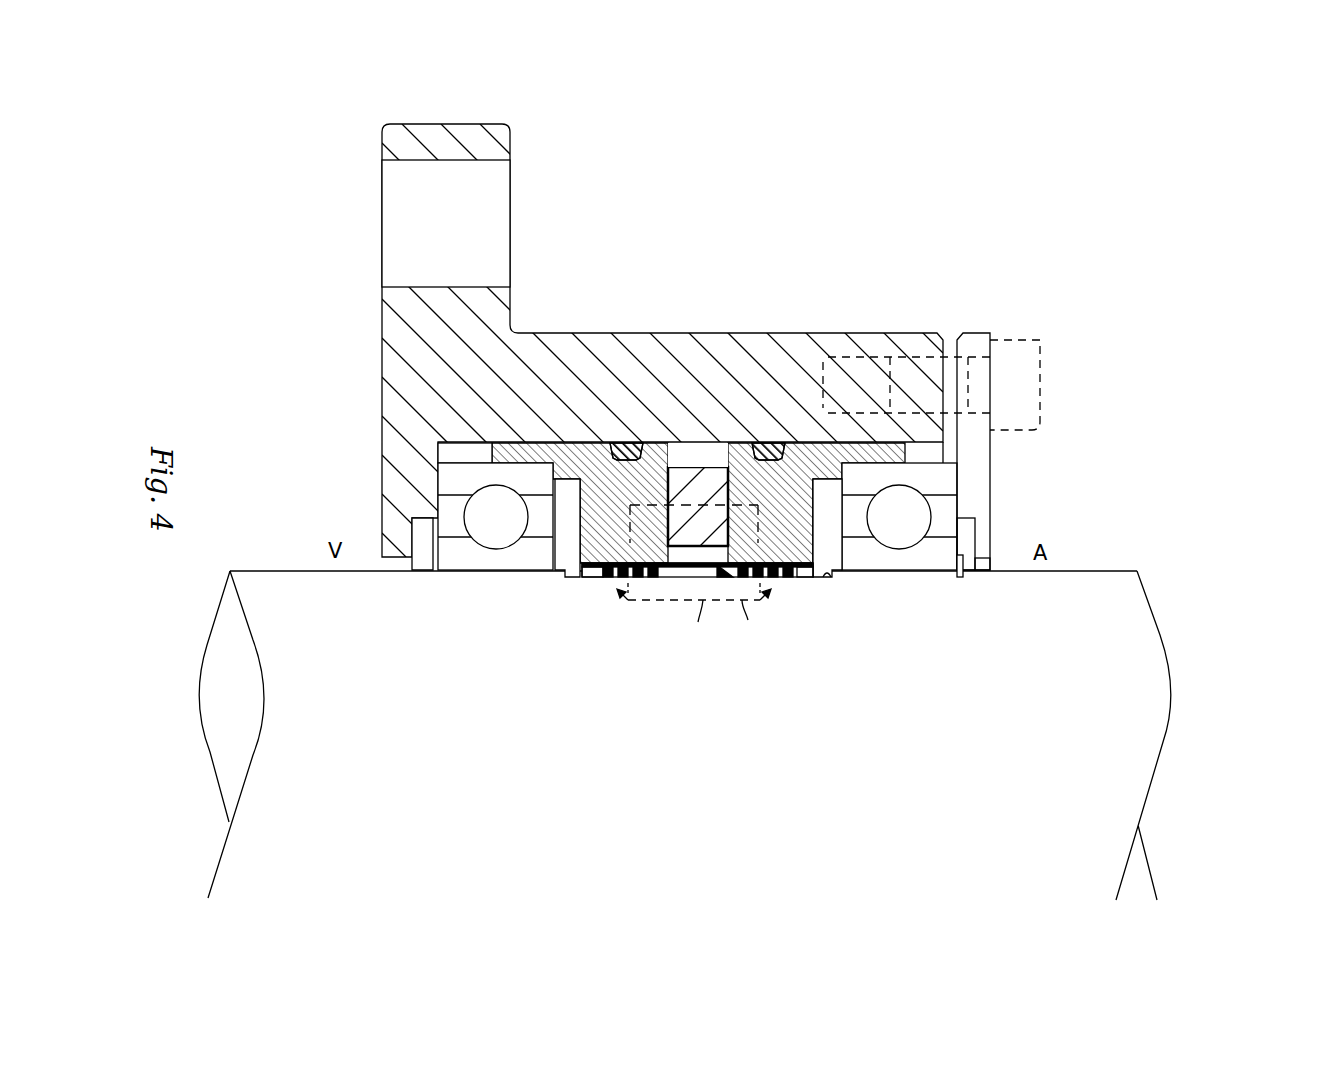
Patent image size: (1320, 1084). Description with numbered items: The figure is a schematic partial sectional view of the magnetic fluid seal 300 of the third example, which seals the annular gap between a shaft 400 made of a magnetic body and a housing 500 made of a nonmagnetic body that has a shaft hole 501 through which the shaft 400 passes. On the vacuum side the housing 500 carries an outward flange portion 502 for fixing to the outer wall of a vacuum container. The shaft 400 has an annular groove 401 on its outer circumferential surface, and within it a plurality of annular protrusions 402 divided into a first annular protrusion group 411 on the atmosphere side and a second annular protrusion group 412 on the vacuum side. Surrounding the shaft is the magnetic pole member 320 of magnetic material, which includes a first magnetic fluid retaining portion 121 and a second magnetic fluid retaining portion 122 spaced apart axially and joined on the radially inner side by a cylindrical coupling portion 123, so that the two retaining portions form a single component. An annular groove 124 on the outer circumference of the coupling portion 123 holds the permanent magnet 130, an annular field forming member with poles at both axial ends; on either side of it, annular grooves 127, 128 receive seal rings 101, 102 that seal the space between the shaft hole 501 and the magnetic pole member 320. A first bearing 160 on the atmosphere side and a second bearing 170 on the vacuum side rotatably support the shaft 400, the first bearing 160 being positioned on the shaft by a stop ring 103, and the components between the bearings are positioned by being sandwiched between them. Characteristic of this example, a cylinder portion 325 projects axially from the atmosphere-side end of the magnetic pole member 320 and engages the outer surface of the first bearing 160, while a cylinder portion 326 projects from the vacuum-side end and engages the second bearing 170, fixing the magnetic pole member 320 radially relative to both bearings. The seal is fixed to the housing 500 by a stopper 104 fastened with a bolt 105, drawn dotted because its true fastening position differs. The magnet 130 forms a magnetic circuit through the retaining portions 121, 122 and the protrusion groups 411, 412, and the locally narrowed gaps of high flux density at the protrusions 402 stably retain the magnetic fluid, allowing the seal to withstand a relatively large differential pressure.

The housing 500 is at (594, 317).
The outward flange portion 502 is at (498, 152).
The shaft hole 501 is at (681, 443).
The shaft 400 is at (1150, 685).
The magnetic fluid seal 300 is at (835, 494).
The cylinder portion 326 is at (512, 443).
The cylinder portion 325 is at (855, 455).
The seal ring 102 is at (628, 443).
The annular groove 127 is at (802, 443).
The annular groove 128 is at (597, 443).
The seal ring 101 is at (770, 443).
The annular groove 124 is at (705, 443).
The permanent magnet 130 is at (698, 467).
The second bearing 170 is at (450, 560).
The first bearing 160 is at (937, 563).
The stopper 104 is at (993, 497).
The stop ring 103 is at (960, 577).
The bolt 105 is at (1038, 342).
The coupling portion 123 is at (695, 577).
The second magnetic fluid retaining portion 122 is at (593, 577).
The first magnetic fluid retaining portion 121 is at (793, 577).
The annular protrusions 402 is at (643, 577).
The annular groove 401 is at (828, 577).
The second annular protrusion group 412 is at (617, 577).
The first annular protrusion group 411 is at (762, 577).
The magnetic pole member 320 is at (722, 577).